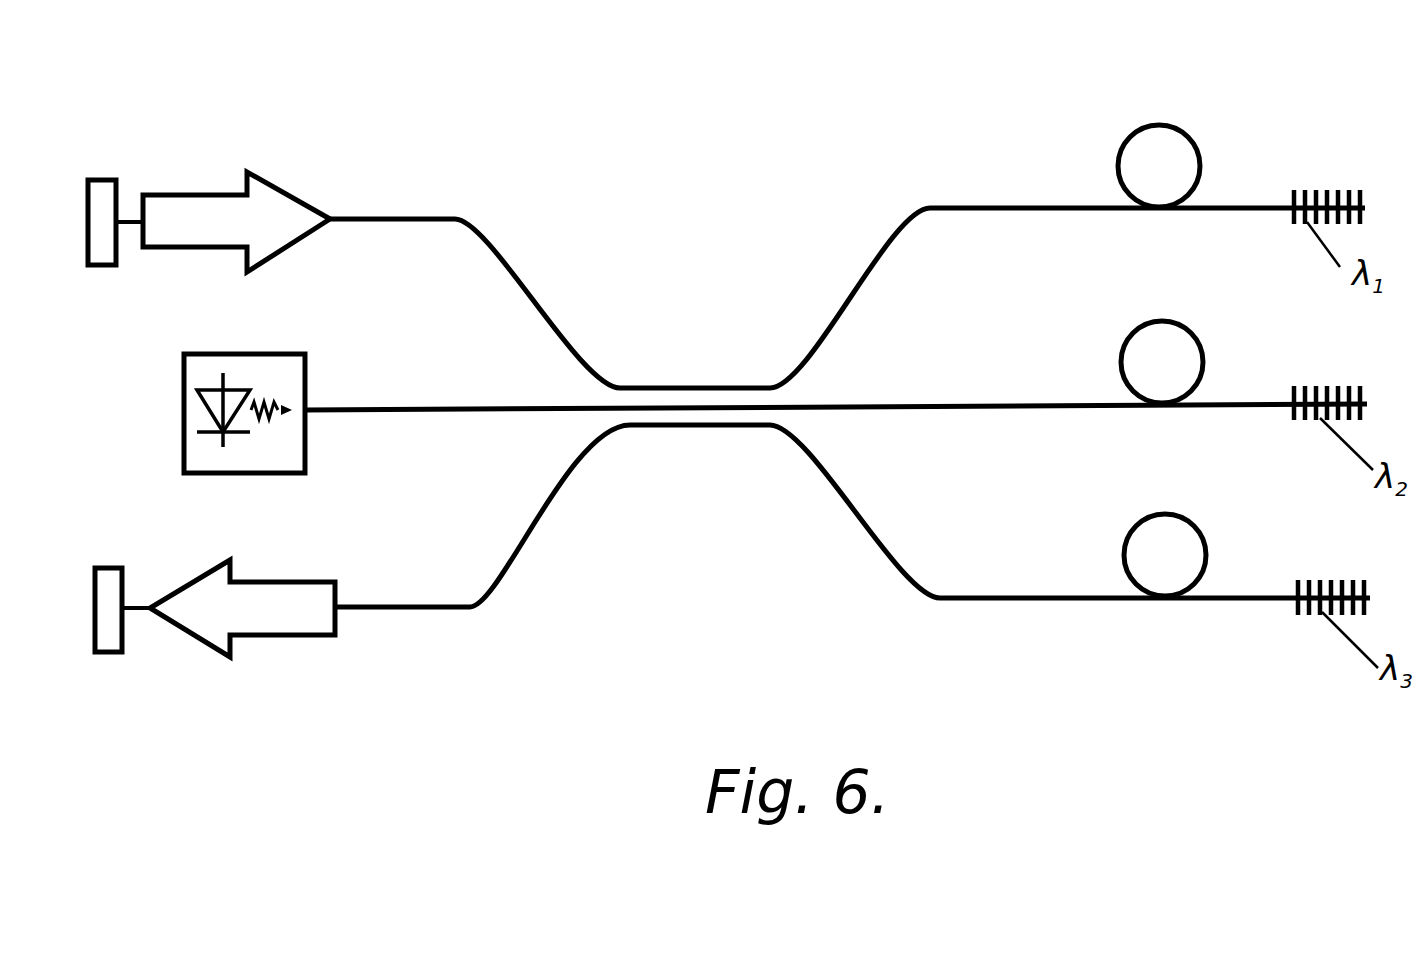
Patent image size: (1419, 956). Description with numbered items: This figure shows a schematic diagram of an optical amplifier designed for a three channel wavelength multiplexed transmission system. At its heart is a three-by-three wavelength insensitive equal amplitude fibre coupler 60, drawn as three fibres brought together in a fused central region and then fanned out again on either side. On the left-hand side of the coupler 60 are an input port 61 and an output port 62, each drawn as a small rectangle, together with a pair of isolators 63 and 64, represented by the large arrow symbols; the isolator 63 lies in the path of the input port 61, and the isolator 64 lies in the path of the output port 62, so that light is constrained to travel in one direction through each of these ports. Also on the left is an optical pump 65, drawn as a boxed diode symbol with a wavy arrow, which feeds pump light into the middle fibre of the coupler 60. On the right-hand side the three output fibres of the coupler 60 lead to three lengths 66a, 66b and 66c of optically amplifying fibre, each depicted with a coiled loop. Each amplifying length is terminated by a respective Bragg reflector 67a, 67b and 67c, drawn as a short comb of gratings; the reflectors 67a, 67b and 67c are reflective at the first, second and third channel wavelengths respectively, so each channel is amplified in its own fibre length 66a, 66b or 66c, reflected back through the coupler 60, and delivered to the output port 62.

The 3×3 wavelength insensitive equal amplitude fibre coupler 60 is at (682, 360).
The input port 61 is at (103, 200).
The output port 62 is at (107, 635).
The isolator 63 is at (197, 213).
The isolator 64 is at (275, 610).
The optical pump 65 is at (268, 378).
The length of optically amplifying fibre 66a is at (1122, 148).
The length of optically amplifying fibre 66b is at (1127, 340).
The length of optically amplifying fibre 66c is at (1125, 535).
The Bragg reflector 67a is at (1323, 190).
The Bragg reflector 67b is at (1340, 385).
The Bragg reflector 67c is at (1340, 577).